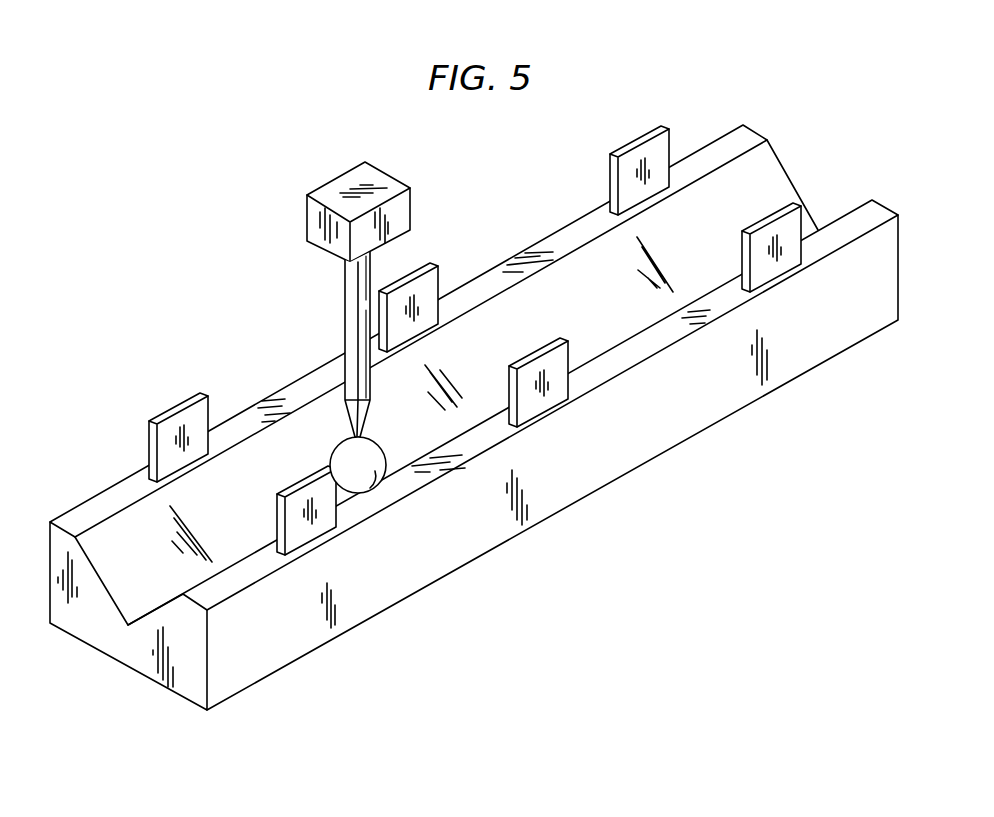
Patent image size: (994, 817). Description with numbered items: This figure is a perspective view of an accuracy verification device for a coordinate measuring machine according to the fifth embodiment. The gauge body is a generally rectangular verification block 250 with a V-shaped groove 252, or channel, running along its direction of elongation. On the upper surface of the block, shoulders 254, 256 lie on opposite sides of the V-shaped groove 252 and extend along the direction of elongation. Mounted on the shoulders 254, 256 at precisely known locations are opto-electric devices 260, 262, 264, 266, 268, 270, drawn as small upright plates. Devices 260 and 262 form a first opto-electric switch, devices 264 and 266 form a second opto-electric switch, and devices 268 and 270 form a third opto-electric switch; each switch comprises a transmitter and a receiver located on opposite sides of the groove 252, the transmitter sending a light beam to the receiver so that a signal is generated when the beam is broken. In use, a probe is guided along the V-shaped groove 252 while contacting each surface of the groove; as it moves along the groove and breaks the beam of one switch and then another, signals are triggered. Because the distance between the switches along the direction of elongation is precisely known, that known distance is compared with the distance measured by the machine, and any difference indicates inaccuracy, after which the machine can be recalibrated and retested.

The verification block 250 is at (478, 556).
The V-shaped groove 252 is at (111, 600).
The shoulder 254 is at (109, 500).
The shoulder 256 is at (223, 585).
The opto-electric device 260 is at (184, 402).
The opto-electric device 262 is at (301, 484).
The opto-electric device 264 is at (436, 262).
The opto-electric device 266 is at (553, 396).
The opto-electric device 268 is at (638, 130).
The opto-electric device 270 is at (782, 173).